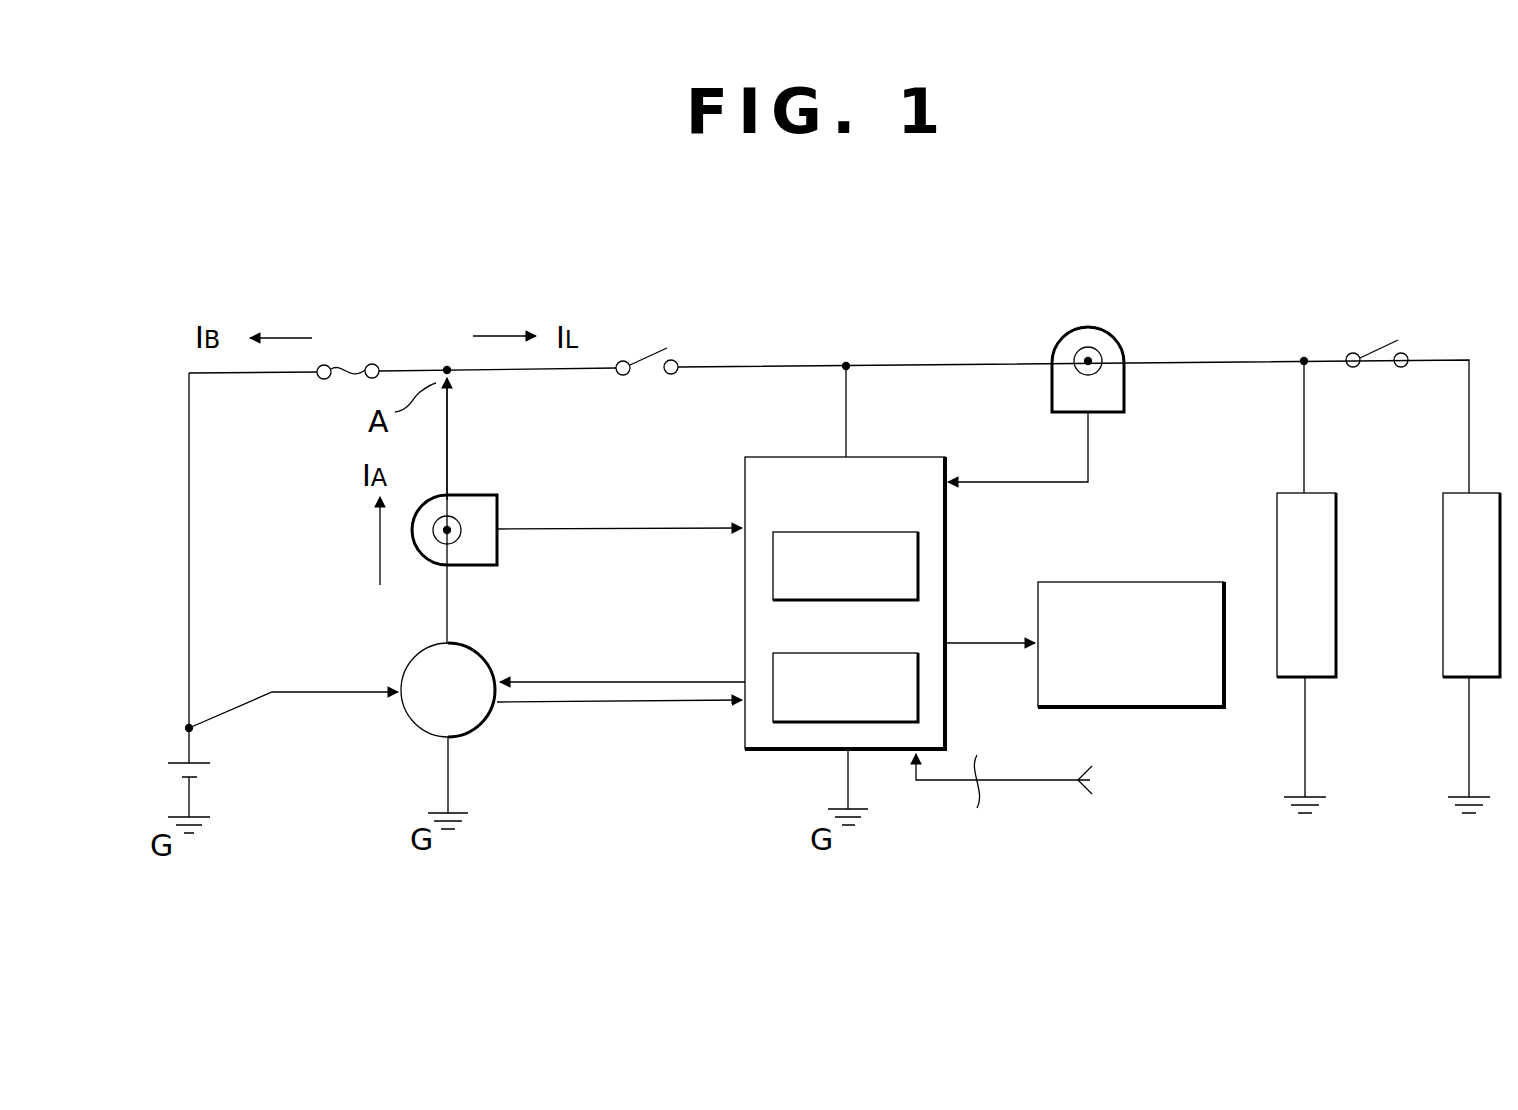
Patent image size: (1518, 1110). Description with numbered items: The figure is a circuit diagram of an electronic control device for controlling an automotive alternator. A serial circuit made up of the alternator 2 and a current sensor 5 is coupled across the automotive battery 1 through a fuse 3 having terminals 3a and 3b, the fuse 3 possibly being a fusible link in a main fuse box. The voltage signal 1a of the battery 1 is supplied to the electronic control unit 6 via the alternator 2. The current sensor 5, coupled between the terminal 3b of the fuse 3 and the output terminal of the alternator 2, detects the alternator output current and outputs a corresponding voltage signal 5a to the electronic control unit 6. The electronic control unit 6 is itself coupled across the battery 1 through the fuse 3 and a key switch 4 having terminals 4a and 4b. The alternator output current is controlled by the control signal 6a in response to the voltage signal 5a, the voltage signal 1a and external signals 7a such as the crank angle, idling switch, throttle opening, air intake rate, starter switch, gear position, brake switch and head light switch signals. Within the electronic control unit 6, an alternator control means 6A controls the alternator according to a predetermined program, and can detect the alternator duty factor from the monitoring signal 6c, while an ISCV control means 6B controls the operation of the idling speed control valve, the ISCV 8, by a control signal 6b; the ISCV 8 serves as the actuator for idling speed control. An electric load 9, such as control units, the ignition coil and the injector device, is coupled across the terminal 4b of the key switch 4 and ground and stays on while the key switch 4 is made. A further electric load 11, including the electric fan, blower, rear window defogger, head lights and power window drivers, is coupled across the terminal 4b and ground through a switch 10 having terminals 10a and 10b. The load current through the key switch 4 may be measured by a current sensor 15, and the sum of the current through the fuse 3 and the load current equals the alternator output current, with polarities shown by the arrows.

The automotive battery 1 is at (205, 770).
The voltage signal 1a is at (324, 690).
The alternator 2 is at (482, 652).
The fuse 3 is at (348, 363).
The terminal of the fuse 3a is at (324, 364).
The terminal of the fuse 3b is at (378, 364).
The key switch 4 is at (664, 346).
The terminal of the key switch 4a is at (623, 360).
The terminal of the key switch 4b is at (673, 375).
The current sensor 5 is at (500, 552).
The voltage signal 5a is at (572, 527).
The electronic control unit 6 is at (948, 476).
The alternator control means 6A is at (800, 724).
The ISCV control means 6B is at (918, 550).
The control signal 6a is at (645, 680).
The control signal 6b is at (990, 640).
The monitoring signal 6c is at (645, 705).
The external signals 7a is at (1040, 777).
The ISCV (idling speed control valve) 8 is at (1127, 582).
The electric load 9 is at (1336, 628).
The switch 10 is at (1386, 338).
The terminal of the switch 10a is at (1350, 353).
The terminal of the switch 10b is at (1400, 368).
The electric load 11 is at (1443, 552).
The current sensor 15 is at (1114, 330).